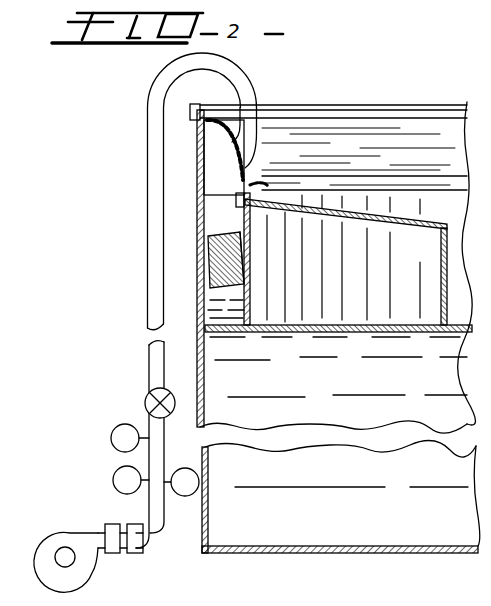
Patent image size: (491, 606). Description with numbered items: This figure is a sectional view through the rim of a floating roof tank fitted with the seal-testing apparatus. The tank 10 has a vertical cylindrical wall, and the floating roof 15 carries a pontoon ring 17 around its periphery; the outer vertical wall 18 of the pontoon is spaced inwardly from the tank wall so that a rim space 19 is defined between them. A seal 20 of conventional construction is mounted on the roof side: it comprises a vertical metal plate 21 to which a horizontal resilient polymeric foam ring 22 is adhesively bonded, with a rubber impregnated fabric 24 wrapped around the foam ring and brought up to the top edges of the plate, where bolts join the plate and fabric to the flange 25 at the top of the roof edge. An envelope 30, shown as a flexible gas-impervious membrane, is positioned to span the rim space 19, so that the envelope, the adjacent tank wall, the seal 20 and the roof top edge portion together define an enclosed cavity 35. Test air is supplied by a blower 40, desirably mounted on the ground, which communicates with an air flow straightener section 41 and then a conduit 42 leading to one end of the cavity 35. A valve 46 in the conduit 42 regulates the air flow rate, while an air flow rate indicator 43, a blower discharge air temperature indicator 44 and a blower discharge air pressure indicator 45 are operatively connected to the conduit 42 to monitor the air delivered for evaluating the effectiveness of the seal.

The tank 10 is at (180, 242).
The floating roof 15 is at (427, 200).
The pontoon ring 17 is at (350, 213).
The outer vertical wall 18 is at (203, 312).
The rim space 19 is at (200, 216).
The seal 20 is at (224, 220).
The vertical metal plate 21 is at (220, 242).
The resilient polymeric foam ring 22 is at (238, 258).
The rubber impregnated fabric 24 is at (228, 280).
The flange 25 is at (253, 193).
The envelope 30 is at (255, 144).
The enclosed cavity 35 is at (205, 152).
The blower 40 is at (85, 584).
The air flow straightener section 41 is at (110, 525).
The conduit 42 is at (146, 88).
The air flow rate indicator 43 is at (182, 467).
The blower discharge air temperature indicator 44 is at (112, 478).
The blower discharge air pressure indicator 45 is at (108, 440).
The valve 46 is at (146, 398).